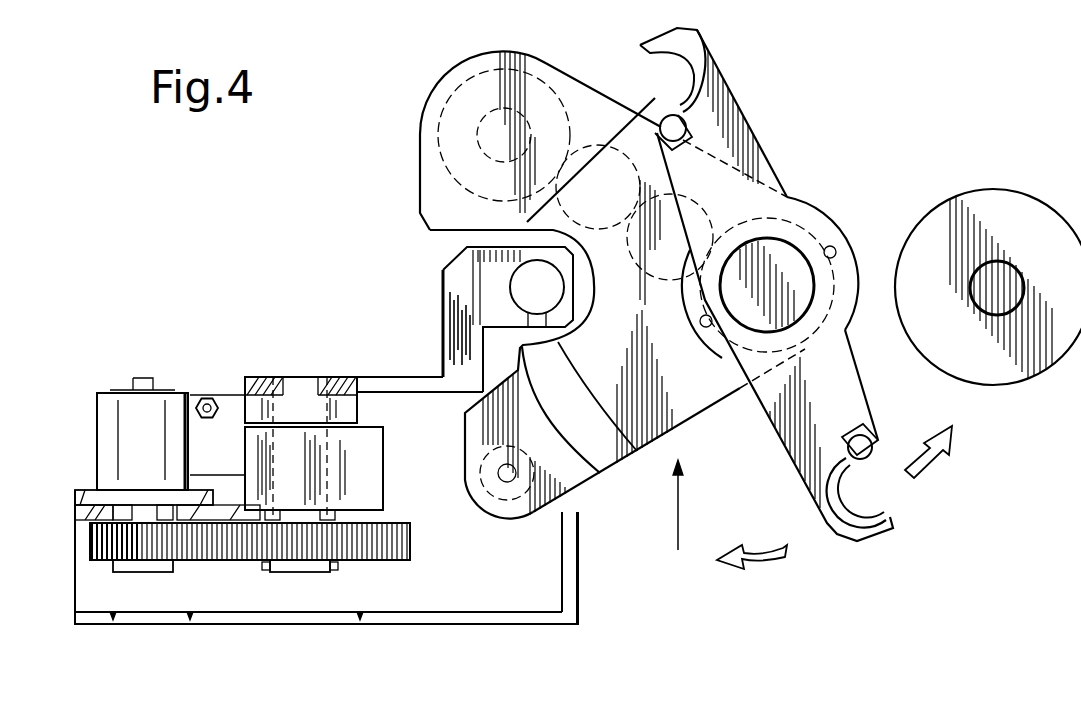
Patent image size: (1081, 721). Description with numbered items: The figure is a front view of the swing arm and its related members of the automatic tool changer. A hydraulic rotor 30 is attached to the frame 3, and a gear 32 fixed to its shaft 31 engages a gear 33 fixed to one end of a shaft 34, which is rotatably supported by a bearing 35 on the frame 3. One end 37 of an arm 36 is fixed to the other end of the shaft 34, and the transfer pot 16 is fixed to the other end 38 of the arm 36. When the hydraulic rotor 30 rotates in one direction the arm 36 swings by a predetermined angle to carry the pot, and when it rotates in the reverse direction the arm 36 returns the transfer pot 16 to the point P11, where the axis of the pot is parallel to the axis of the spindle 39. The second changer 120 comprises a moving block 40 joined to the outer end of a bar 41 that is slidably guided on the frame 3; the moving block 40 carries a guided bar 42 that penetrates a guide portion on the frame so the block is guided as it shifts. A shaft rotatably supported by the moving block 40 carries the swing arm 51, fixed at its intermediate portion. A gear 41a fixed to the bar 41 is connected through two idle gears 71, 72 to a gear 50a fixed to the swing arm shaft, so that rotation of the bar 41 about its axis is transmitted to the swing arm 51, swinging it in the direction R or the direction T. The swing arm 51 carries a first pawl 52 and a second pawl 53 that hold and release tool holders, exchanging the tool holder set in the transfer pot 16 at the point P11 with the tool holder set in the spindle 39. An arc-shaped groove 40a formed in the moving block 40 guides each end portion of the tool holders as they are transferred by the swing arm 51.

The frame 3 is at (255, 625).
The transfer pot 16 is at (492, 288).
The hydraulic rotor 30 is at (178, 393).
The shaft 31 is at (140, 505).
The gear 32 is at (97, 561).
The gear 33 is at (241, 561).
The shaft 34 is at (300, 520).
The bearing 35 is at (383, 478).
The arm 36 is at (420, 386).
The one end of arm 37 is at (265, 378).
The other end of arm 38 is at (447, 343).
The spindle 39 is at (1010, 388).
The moving block 40 is at (697, 423).
The arc-shaped groove 40a is at (602, 120).
The bar 41 is at (477, 135).
The gear 41a is at (487, 78).
The guided bar 42 is at (482, 492).
The gear 50a is at (788, 198).
The swing arm 51 is at (747, 131).
The first pawl 52 is at (697, 70).
The second pawl 53 is at (836, 488).
The idle gear 71 is at (640, 173).
The idle gear 72 is at (703, 217).
The second changer 120 is at (679, 526).
The point P11 is at (436, 266).
The direction R is at (932, 455).
The direction T is at (784, 549).